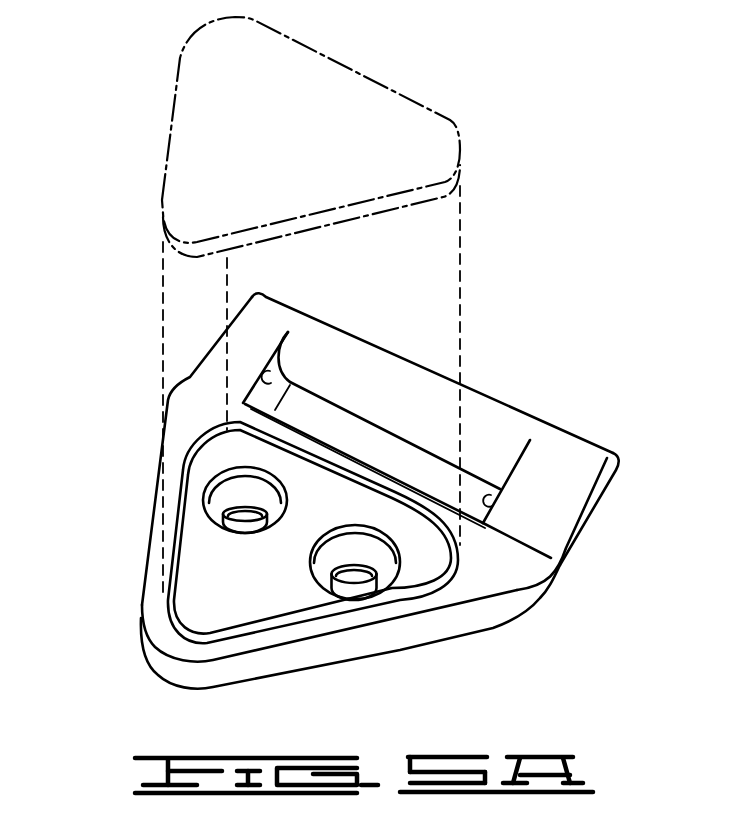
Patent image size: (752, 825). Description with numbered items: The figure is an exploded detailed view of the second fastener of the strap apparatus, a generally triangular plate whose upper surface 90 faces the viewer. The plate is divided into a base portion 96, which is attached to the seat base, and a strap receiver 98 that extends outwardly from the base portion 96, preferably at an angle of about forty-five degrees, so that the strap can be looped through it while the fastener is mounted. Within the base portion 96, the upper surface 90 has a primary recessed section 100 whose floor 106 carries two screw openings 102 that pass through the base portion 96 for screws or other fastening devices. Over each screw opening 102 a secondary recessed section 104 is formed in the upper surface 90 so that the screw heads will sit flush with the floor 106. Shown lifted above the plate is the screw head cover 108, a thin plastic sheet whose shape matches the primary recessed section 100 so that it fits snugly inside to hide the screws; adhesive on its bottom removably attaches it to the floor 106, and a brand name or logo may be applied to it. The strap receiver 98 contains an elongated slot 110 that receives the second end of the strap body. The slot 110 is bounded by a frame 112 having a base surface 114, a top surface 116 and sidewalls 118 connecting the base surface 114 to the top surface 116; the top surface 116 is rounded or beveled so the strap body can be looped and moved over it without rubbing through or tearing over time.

The upper surface 90 is at (490, 573).
The base portion 96 is at (440, 620).
The strap receiver 98 is at (552, 487).
The primary recessed section 100 is at (200, 573).
The screw openings 102 is at (245, 522).
The secondary recessed section 104 is at (240, 488).
The floor 106 is at (197, 617).
The screw head cover 108 is at (207, 90).
The elongated slot 110 is at (378, 447).
The frame 112 is at (477, 470).
The base surface 114 is at (290, 416).
The top surface 116 is at (333, 401).
The sidewalls 118 is at (270, 377).